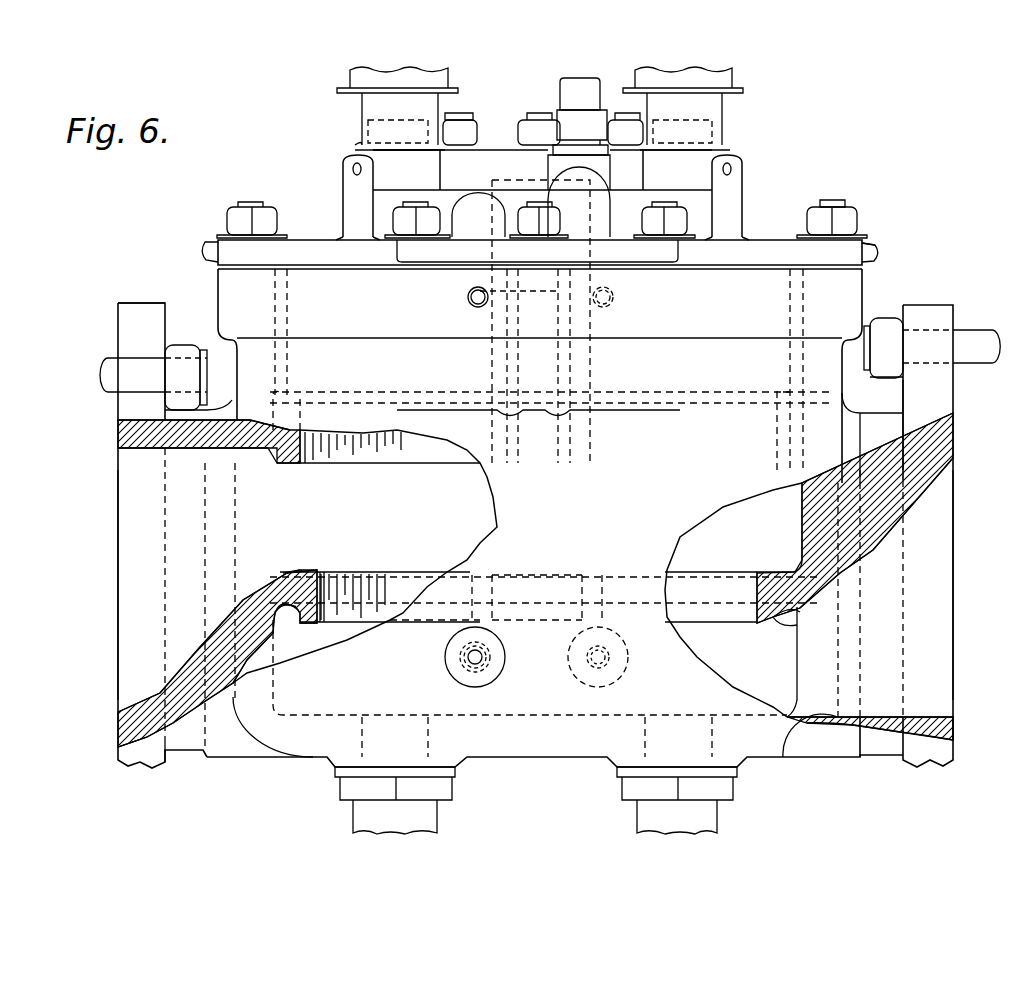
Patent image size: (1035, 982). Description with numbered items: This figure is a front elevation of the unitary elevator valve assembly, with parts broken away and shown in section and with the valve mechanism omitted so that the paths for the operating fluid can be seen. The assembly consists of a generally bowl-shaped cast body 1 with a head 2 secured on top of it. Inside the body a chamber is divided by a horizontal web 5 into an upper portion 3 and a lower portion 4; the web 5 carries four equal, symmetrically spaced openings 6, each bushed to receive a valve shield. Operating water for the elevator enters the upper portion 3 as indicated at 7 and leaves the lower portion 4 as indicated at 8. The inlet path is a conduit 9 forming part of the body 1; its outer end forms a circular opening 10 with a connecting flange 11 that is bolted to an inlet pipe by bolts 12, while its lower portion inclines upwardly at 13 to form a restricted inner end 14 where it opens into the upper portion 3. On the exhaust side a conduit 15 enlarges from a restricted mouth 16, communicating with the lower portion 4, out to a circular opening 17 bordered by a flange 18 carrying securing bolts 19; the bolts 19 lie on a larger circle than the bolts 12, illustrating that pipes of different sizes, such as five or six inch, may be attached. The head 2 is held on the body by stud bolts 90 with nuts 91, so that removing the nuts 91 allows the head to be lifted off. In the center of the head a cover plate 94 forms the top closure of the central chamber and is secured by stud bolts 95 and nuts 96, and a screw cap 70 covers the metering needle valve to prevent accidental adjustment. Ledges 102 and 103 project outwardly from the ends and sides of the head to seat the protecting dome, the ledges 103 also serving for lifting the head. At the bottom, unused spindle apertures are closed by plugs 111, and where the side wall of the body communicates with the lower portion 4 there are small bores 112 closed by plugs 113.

The body 1 is at (875, 293).
The head 2 is at (757, 192).
The upper portion of the chamber 3 is at (300, 498).
The lower portion of the chamber 4 is at (292, 637).
The horizontal web 5 is at (312, 570).
The openings 6 is at (392, 585).
The inflow of operating water 7 is at (138, 557).
The outflow of operating water 8 is at (920, 638).
The conduit 9 is at (133, 484).
The circular opening 10 is at (135, 705).
The connecting flange 11 is at (130, 303).
The bolts 12 is at (105, 352).
The upwardly inclined lower portion 13 is at (190, 657).
The restricted inner end 14 is at (272, 578).
The conduit 15 is at (935, 585).
The restricted mouth 16 is at (810, 622).
The circular opening 17 is at (943, 480).
The flange 18 is at (935, 385).
The securing bolts 19 is at (960, 338).
The screw cap 70 is at (583, 88).
The stud bolts 90 is at (832, 200).
The nuts 91 is at (847, 206).
The cover plate 94 is at (497, 157).
The stud bolts 95 is at (457, 113).
The nuts 96 is at (472, 135).
The ledges 102 is at (872, 252).
The ledges 103 is at (420, 250).
The plugs 111 is at (708, 816).
The small bores 112 is at (483, 656).
The plugs 113 is at (490, 667).